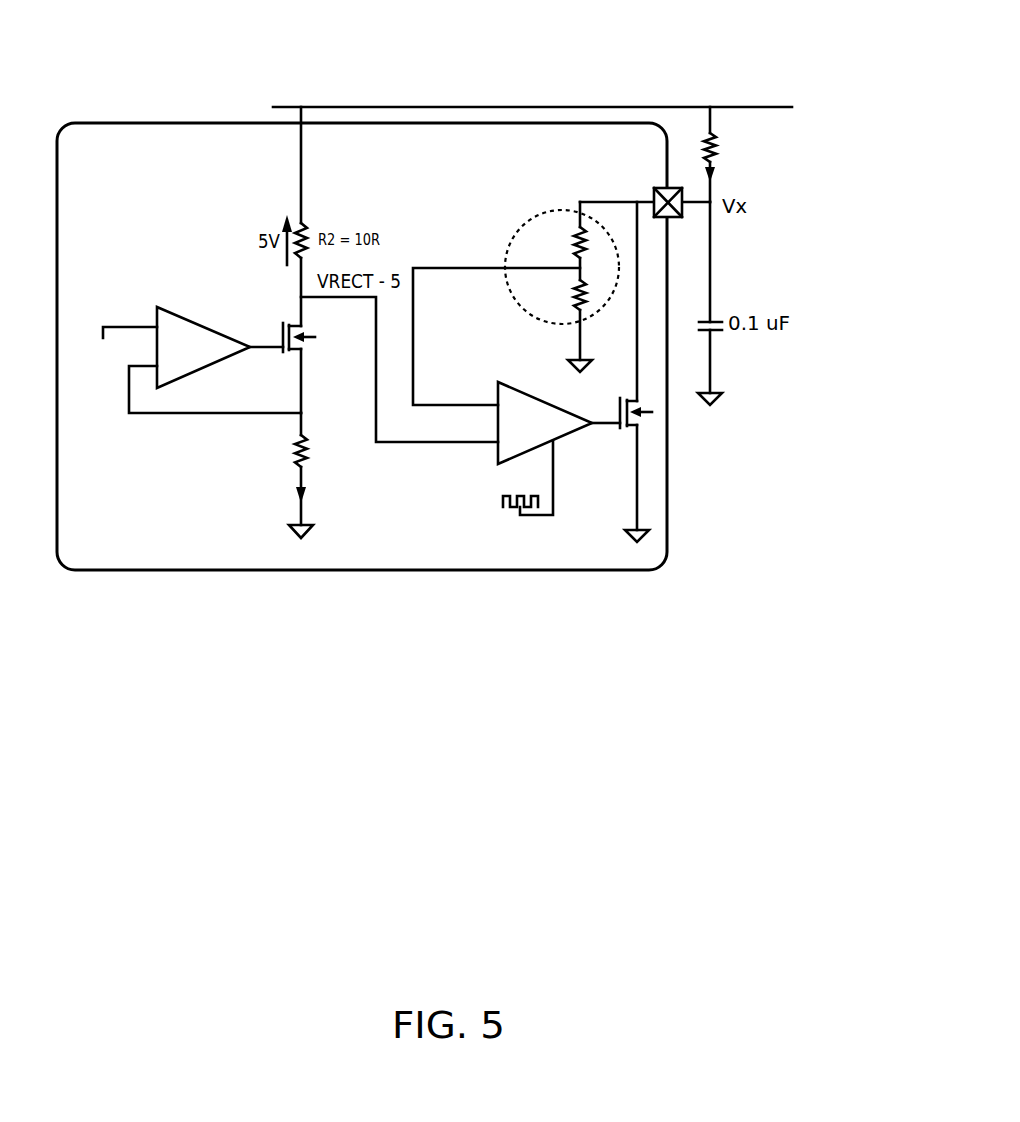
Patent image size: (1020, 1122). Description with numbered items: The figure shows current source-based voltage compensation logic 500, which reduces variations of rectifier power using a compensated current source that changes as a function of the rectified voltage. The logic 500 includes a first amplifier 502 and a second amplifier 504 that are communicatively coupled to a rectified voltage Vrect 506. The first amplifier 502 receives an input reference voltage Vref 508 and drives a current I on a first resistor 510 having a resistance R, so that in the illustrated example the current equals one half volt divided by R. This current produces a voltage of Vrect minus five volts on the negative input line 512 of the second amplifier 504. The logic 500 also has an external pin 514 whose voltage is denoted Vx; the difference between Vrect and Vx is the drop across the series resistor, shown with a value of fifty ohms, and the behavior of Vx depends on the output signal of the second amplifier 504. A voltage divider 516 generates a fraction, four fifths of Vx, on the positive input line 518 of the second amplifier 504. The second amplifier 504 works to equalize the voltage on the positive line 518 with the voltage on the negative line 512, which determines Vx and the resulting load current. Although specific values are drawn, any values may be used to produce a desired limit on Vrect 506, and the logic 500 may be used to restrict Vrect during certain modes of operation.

The current source-based voltage compensation logic 500 is at (469, 996).
The first amplifier 502 is at (188, 316).
The second amplifier 504 is at (548, 397).
The rectified voltage (Vrect) 506 is at (662, 57).
The input reference voltage (Vref) 508 is at (118, 291).
The first resistor (R1) 510 is at (295, 450).
The negative input line of the second amplifier 512 is at (458, 445).
The external pin 514 is at (657, 189).
The voltage divider 516 is at (541, 212).
The positive input line of the second amplifier 518 is at (415, 347).